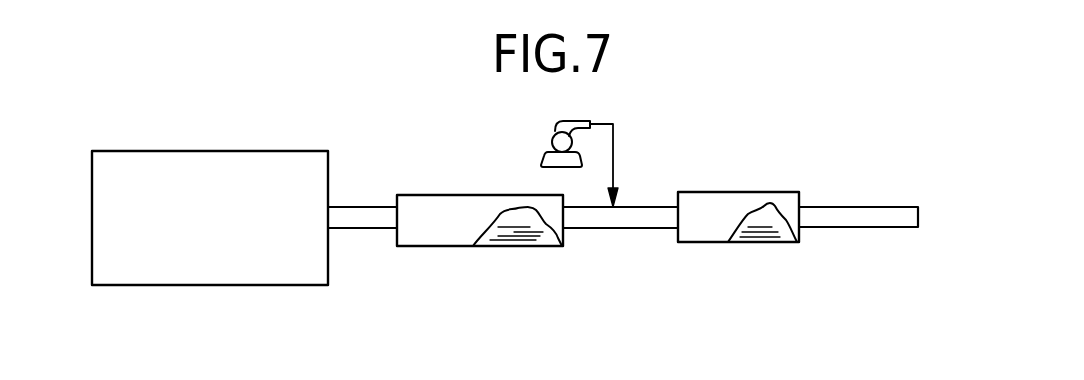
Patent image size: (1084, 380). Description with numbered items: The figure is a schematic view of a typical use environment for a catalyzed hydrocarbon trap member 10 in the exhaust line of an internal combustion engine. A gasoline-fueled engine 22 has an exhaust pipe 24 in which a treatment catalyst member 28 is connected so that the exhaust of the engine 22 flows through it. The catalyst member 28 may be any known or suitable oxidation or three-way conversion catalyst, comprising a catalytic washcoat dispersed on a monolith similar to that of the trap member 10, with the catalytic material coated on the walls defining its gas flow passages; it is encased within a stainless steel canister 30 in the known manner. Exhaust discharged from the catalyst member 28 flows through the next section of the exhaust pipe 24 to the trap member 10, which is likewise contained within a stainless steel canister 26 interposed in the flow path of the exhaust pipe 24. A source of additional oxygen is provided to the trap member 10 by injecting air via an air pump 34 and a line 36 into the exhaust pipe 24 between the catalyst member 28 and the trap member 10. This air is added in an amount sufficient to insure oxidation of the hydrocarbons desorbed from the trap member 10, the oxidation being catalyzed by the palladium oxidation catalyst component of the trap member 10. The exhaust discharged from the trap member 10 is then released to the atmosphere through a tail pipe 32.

The trap member 10 is at (758, 235).
The gasoline-fueled engine 22 is at (184, 285).
The exhaust pipe 24 is at (357, 204).
The stainless steel canister 26 is at (715, 207).
The treatment catalyst member 28 is at (512, 233).
The stainless steel canister 30 is at (443, 227).
The tail pipe 32 is at (857, 203).
The air pump 34 is at (545, 148).
The line 36 is at (615, 153).